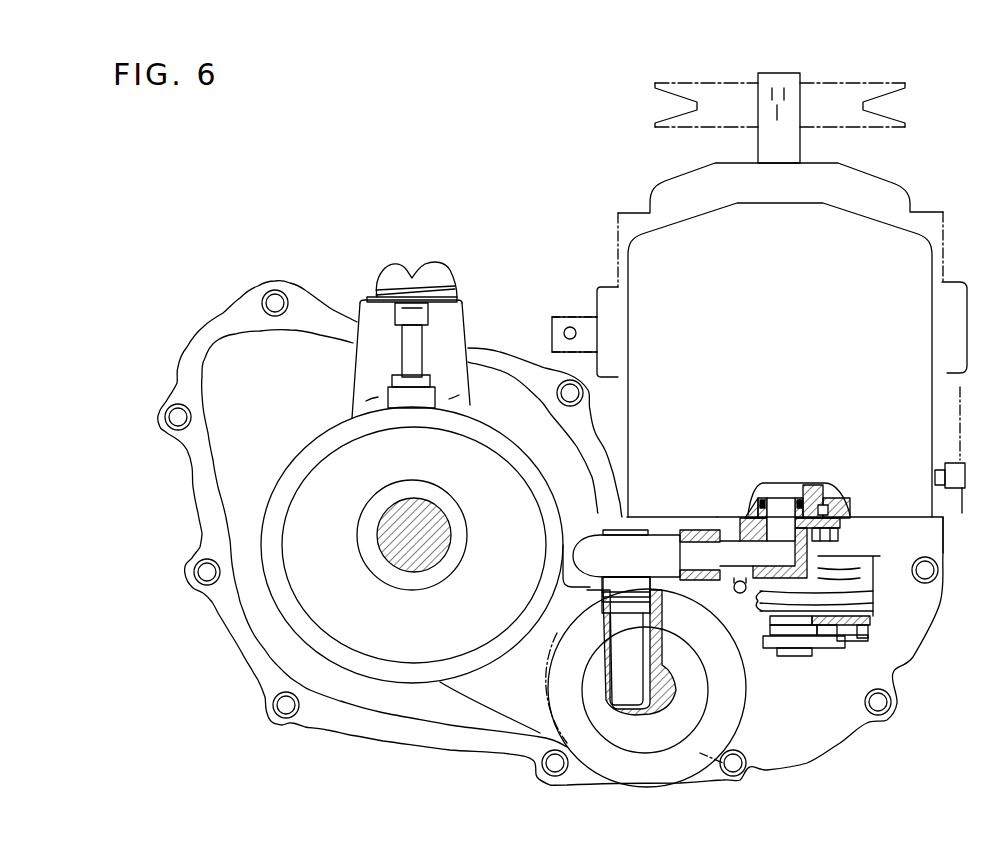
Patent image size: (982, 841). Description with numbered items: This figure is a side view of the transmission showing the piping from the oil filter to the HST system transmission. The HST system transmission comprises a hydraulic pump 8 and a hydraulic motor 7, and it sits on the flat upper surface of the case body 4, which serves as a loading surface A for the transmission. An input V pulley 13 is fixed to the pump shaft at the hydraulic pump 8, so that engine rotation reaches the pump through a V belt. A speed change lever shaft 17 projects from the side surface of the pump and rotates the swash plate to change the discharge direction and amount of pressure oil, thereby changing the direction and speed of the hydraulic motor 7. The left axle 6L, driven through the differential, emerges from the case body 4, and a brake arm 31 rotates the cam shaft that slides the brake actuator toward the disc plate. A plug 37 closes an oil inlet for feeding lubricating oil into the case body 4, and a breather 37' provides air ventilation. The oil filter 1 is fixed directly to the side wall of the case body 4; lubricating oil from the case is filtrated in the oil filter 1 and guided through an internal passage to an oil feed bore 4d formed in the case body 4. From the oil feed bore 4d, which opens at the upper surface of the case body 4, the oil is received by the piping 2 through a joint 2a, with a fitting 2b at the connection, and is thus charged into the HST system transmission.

The oil filter 1 is at (745, 690).
The piping 2 is at (592, 536).
The joint 2a is at (592, 586).
The hose fitting 2b is at (738, 549).
The case body 4 is at (478, 752).
The oil feed bore 4d is at (628, 646).
The left axle 6L is at (425, 518).
The hydraulic motor 7 is at (795, 365).
The hydraulic pump 8 is at (683, 179).
The input V pulley 13 is at (886, 83).
The speed change lever shaft 17 is at (592, 314).
The brake arm 31 is at (827, 642).
The plug 37 is at (414, 255).
The breather 37' is at (445, 283).
The loading surface A is at (682, 512).